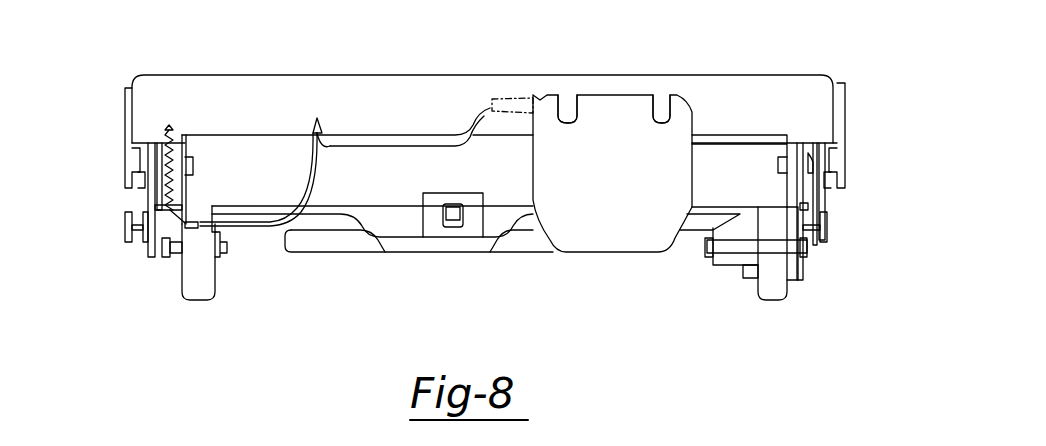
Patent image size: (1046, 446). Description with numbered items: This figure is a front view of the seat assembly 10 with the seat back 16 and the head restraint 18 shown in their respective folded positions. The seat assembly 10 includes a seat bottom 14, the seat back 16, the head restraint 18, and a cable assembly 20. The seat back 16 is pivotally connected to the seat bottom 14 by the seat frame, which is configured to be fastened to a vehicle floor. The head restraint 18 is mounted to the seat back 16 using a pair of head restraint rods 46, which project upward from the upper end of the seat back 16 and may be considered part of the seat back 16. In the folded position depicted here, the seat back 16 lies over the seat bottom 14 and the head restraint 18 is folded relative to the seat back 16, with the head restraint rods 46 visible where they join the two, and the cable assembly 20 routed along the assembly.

The seat assembly 10 is at (147, 61).
The seat bottom 14 is at (342, 220).
The seat back 16 is at (838, 77).
The head restraint 18 is at (612, 254).
The cable assembly 20 is at (410, 140).
The head restraint rods 46 is at (568, 103).